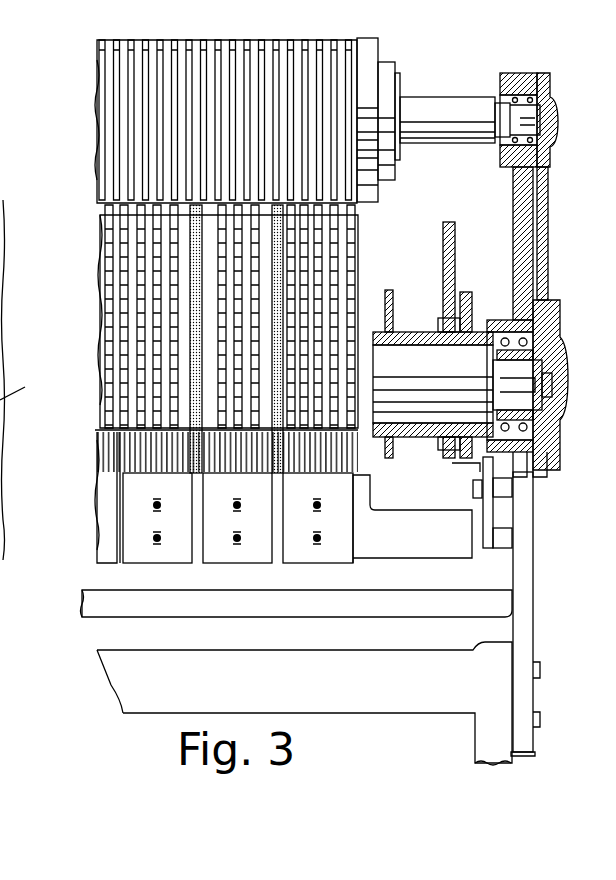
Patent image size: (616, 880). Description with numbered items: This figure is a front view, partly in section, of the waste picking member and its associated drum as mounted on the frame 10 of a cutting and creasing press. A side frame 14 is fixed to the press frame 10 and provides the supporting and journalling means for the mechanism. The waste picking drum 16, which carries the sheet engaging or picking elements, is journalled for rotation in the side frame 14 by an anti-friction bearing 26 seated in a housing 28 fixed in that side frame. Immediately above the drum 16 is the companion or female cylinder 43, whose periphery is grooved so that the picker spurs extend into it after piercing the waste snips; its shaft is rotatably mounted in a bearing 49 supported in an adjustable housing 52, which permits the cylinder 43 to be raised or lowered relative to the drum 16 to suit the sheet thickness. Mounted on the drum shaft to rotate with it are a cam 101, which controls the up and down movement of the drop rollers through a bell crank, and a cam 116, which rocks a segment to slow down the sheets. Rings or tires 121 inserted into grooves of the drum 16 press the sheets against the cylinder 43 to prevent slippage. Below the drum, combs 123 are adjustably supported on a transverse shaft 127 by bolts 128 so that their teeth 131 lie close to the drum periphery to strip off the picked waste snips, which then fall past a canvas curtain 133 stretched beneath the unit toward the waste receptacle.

The frame 10 is at (388, 700).
The side frame 14 is at (525, 523).
The waste picking drum 16 is at (110, 375).
The anti-friction bearing 26 is at (553, 330).
The housing 28 is at (533, 303).
The companion or female cylinder 43 is at (62, 40).
The bearing 49 is at (530, 78).
The adjustable housing 52 is at (510, 75).
The cam 101 is at (467, 292).
The cam 116 is at (447, 222).
The rings or tires 121 is at (275, 285).
The combs 123 is at (108, 510).
The transverse shaft 127 is at (480, 548).
The bolts 128 is at (150, 540).
The teeth 131 is at (100, 432).
The canvas curtain 133 is at (85, 590).